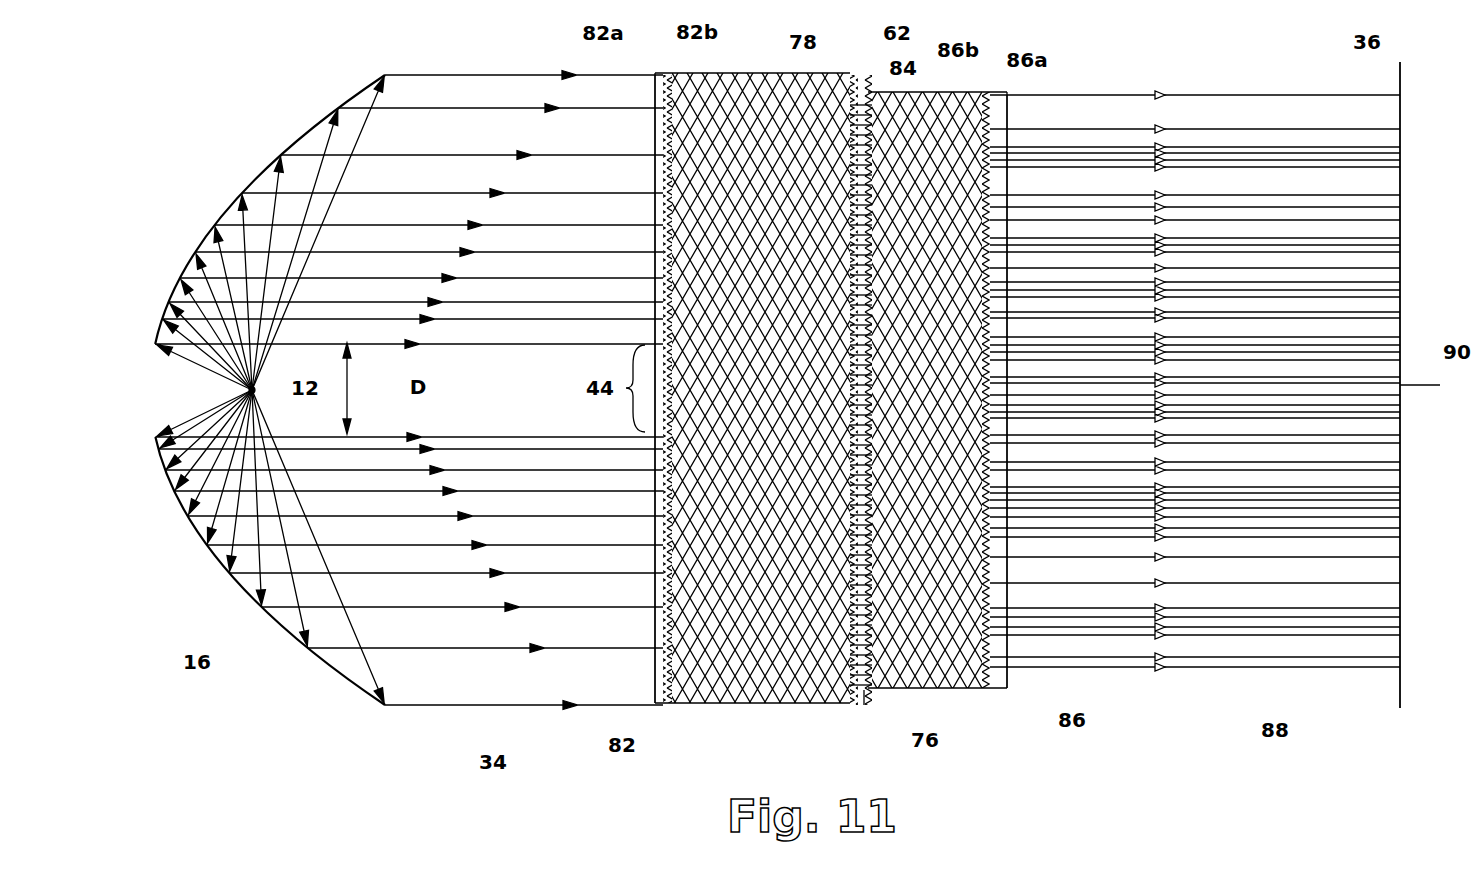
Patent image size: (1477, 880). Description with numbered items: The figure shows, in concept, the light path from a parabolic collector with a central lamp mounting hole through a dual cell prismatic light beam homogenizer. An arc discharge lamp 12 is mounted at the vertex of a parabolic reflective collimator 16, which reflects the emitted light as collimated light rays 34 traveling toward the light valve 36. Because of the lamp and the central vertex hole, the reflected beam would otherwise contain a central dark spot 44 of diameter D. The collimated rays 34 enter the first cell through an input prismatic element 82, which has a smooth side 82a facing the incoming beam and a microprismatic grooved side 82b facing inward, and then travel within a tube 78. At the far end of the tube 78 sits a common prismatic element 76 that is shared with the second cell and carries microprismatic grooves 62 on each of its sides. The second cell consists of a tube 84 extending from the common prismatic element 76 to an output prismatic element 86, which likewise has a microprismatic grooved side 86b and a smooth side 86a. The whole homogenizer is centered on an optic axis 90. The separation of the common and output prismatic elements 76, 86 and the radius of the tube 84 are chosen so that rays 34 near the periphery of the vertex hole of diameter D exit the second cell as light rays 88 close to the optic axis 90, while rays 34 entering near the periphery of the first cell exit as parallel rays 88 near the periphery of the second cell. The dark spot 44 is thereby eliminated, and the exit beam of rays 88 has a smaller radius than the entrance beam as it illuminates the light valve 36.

The arc discharge lamp 12 is at (292, 388).
The parabolic reflective collimator 16 is at (242, 588).
The light rays 34 is at (445, 545).
The light valve 36 is at (1398, 90).
The dark spot 44 is at (635, 388).
The microprismatic grooves 62 is at (867, 72).
The common prismatic element 76 is at (905, 735).
The tube 78 is at (761, 374).
The input prismatic element 82 is at (726, 386).
The smooth side 82a is at (652, 98).
The microprismatic grooved side 82b is at (697, 75).
The tube 84 is at (937, 92).
The output prismatic element 86 is at (1004, 391).
The smooth side 86a is at (1027, 72).
The microprismatic grooved side 86b is at (980, 132).
The light rays 88 is at (1272, 690).
The optic axis 90 is at (1452, 365).
The diameter D is at (405, 387).